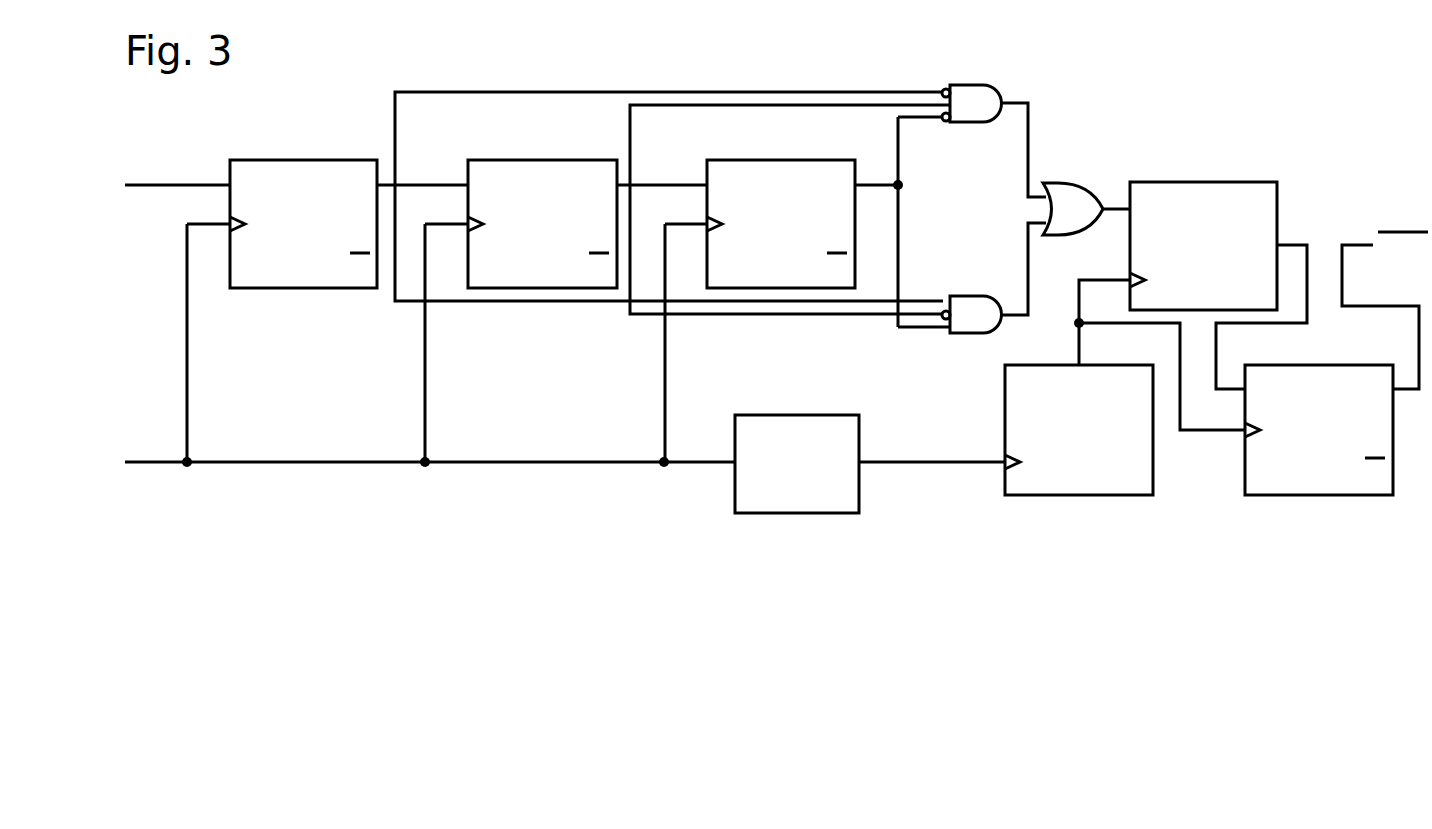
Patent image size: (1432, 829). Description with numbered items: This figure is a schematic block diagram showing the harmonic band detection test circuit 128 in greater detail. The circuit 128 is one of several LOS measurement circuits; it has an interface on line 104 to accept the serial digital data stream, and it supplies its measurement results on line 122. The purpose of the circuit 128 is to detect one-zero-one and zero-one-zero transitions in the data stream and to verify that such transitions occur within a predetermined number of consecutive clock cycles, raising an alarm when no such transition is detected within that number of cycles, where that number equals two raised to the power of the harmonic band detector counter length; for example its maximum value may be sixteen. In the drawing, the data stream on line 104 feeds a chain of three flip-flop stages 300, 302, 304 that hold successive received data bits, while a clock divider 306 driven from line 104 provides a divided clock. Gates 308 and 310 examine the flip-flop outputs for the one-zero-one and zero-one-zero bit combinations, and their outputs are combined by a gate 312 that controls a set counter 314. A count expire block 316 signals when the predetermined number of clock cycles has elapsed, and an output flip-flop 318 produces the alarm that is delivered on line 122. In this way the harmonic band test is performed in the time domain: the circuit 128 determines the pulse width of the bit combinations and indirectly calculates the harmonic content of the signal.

The line 104 is at (322, 460).
The line 122 is at (1353, 245).
The harmonic band detection test circuit 128 is at (1300, 105).
The RSD bit 3 D flip-flop 300 is at (313, 160).
The RSD bit 2 D flip-flop 302 is at (553, 160).
The RSD bit 1 D flip-flop 304 is at (792, 160).
The divide-by-8 clock divider 306 is at (796, 415).
The first NAND gate 308 is at (972, 85).
The second NAND gate 310 is at (968, 296).
The OR gate 312 is at (1066, 183).
The set counter 314 is at (1217, 182).
The count expire 2^N block 316 is at (1090, 365).
The output D flip-flop 318 is at (1330, 365).